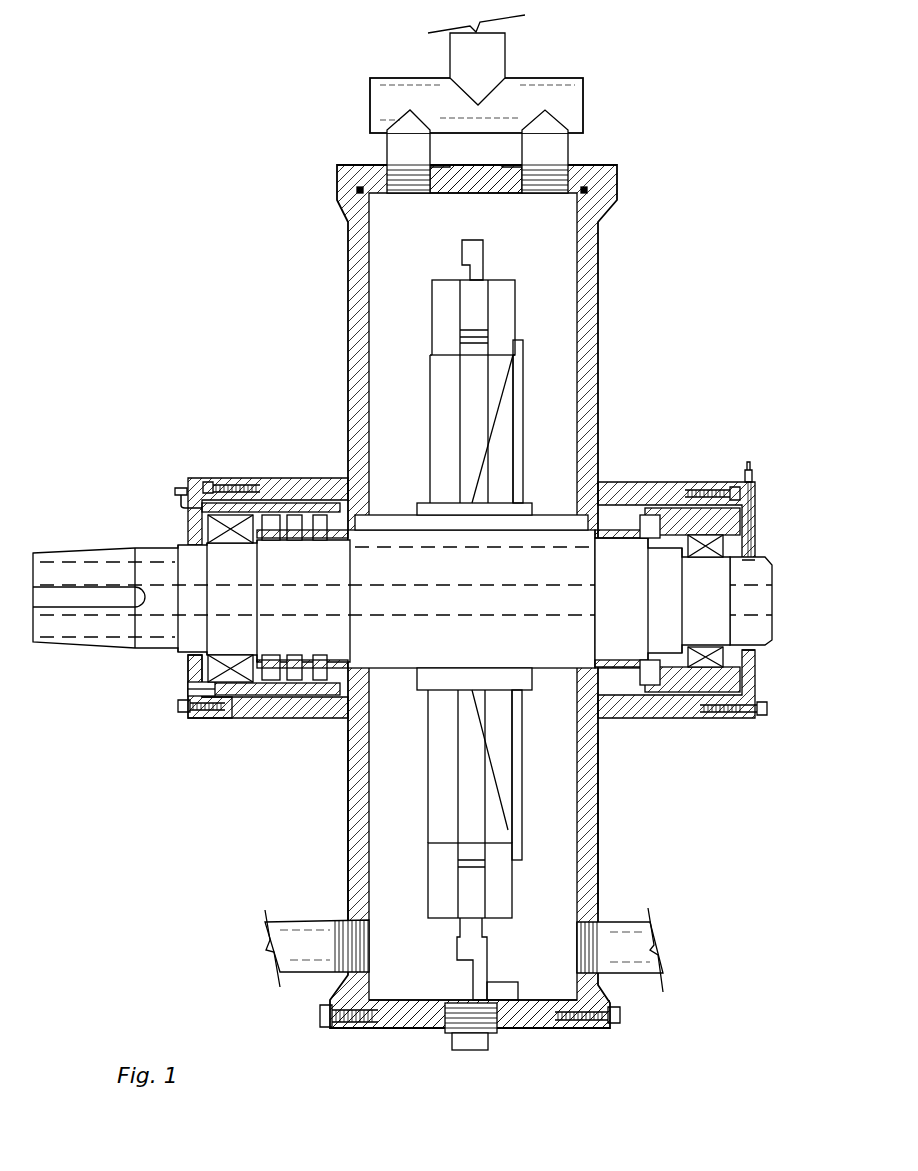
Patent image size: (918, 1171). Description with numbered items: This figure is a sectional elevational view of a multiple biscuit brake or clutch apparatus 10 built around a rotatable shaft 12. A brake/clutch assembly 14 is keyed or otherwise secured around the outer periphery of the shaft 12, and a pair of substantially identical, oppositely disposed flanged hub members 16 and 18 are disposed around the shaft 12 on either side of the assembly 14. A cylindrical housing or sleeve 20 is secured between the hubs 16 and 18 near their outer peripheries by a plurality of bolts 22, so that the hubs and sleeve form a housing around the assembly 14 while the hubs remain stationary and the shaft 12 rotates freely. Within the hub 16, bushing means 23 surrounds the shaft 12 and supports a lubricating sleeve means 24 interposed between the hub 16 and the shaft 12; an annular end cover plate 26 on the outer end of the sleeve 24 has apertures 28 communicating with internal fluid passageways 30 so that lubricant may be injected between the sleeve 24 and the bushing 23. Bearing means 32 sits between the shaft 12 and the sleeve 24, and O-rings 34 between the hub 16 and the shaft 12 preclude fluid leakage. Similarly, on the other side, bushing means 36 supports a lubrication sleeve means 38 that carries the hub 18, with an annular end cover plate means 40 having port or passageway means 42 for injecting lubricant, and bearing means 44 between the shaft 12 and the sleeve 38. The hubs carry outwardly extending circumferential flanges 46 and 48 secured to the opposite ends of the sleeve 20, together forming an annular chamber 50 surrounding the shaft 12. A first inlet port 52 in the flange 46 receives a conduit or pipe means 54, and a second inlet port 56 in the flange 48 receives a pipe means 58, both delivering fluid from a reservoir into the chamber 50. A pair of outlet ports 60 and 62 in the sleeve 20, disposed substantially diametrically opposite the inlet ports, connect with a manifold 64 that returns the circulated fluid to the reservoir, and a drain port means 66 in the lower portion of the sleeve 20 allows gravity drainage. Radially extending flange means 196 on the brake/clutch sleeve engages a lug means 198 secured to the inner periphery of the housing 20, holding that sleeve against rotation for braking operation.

The multiple biscuit brake or clutch apparatus 10 is at (612, 340).
The shaft 12 is at (165, 632).
The brake/clutch assembly 14 is at (428, 770).
The flanged hub member 16 is at (277, 477).
The flanged hub member 18 is at (627, 480).
The cylindrical housing or sleeve 20 is at (430, 1023).
The bolts 22 is at (620, 1013).
The bushing means 23 is at (330, 667).
The lubricating sleeve means 24 is at (230, 718).
The annular end cover plate 26 is at (190, 517).
The apertures 28 is at (183, 685).
The internal fluid passageways 30 is at (248, 697).
The bearing means 32 is at (229, 657).
The O-rings 34 is at (277, 662).
The bushing means 36 is at (612, 663).
The lubrication sleeve means 38 is at (692, 695).
The annular end cover plate means 40 is at (750, 660).
The port or passageway means 42 is at (745, 507).
The bearing means 44 is at (703, 647).
The circumferential flange 46 is at (345, 837).
The circumferential flange 48 is at (600, 820).
The annular chamber 50 is at (388, 362).
The first inlet port 52 is at (370, 928).
The conduit or pipe means 54 is at (299, 960).
The second inlet port 56 is at (573, 928).
The conduit or pipe means 58 is at (617, 932).
The outlet port 60 is at (543, 178).
The outlet port 62 is at (408, 187).
The manifold 64 is at (387, 97).
The drain port means 66 is at (488, 1032).
The radially extending flange means 196 is at (462, 922).
The lug means 198 is at (515, 985).